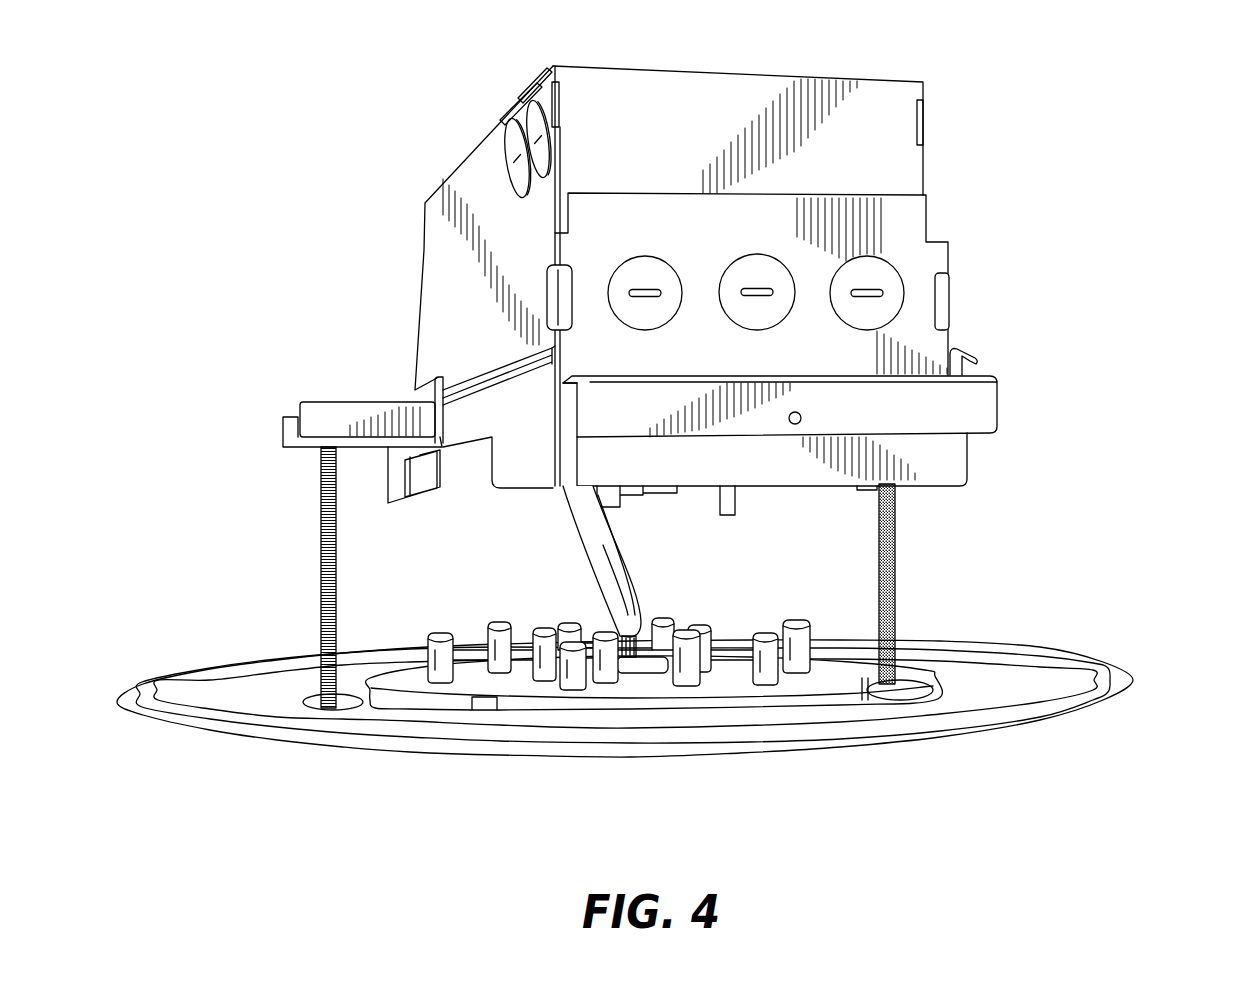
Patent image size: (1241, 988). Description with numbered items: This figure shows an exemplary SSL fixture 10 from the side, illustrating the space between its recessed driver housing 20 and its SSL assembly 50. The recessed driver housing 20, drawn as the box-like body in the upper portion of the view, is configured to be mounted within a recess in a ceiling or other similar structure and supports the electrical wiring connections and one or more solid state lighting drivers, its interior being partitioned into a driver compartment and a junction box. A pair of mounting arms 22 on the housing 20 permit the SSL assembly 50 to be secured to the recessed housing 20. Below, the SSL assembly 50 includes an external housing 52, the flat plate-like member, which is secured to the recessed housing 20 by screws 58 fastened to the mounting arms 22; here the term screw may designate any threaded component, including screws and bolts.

The SSL fixture 10 is at (670, 426).
The recessed driver housing 20 is at (580, 80).
The mounting arms 22 is at (355, 400).
The SSL assembly 50 is at (625, 732).
The external housing 52 is at (803, 748).
The screws 58 is at (893, 557).